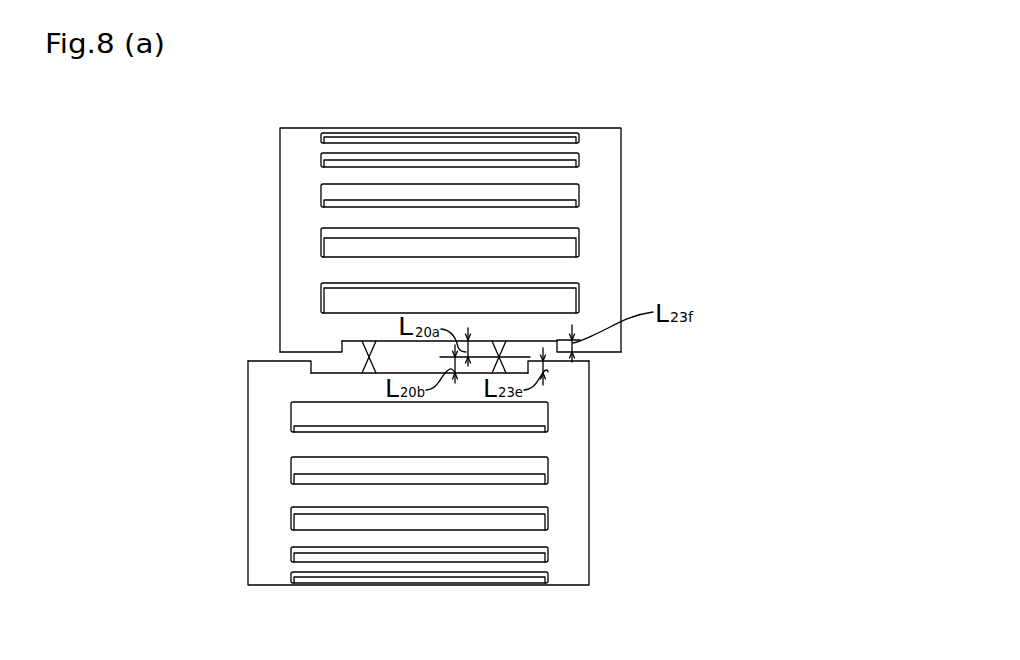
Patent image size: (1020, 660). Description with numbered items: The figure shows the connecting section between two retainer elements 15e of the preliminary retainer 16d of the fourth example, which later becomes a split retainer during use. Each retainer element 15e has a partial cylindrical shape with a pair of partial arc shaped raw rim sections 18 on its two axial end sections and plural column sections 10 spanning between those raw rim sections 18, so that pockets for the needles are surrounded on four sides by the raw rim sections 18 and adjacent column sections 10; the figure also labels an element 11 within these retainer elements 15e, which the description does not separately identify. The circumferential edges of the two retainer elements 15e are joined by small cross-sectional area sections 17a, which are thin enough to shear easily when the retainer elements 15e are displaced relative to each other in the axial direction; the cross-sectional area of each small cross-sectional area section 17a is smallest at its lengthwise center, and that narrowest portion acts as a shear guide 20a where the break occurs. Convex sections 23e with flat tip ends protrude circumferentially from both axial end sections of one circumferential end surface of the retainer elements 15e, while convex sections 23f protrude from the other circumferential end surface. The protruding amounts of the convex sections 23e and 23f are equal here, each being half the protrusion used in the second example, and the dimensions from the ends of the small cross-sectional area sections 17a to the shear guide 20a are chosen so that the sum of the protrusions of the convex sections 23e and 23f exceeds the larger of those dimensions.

The column section 10 is at (472, 175).
The rib 11 is at (388, 296).
The retainer element 15e is at (474, 355).
The preliminary retainer 16d is at (633, 162).
The small cross-sectional area section 17a is at (369, 341).
The raw rim section 18 is at (297, 172).
The shear guide 20a is at (367, 356).
The convex section 23e is at (267, 372).
The convex section 23f is at (302, 345).